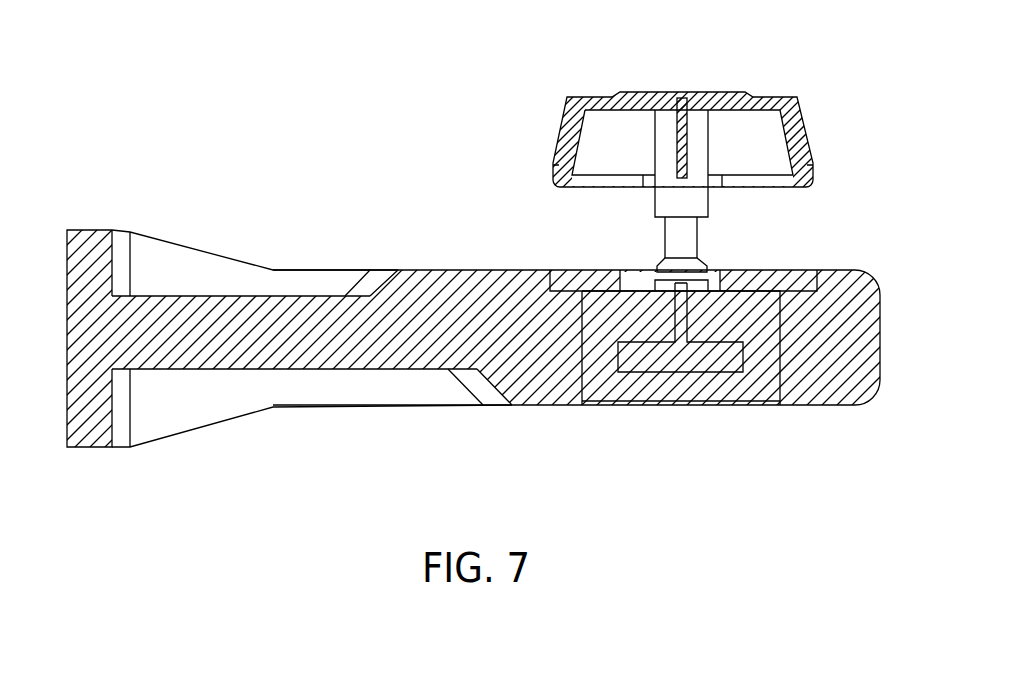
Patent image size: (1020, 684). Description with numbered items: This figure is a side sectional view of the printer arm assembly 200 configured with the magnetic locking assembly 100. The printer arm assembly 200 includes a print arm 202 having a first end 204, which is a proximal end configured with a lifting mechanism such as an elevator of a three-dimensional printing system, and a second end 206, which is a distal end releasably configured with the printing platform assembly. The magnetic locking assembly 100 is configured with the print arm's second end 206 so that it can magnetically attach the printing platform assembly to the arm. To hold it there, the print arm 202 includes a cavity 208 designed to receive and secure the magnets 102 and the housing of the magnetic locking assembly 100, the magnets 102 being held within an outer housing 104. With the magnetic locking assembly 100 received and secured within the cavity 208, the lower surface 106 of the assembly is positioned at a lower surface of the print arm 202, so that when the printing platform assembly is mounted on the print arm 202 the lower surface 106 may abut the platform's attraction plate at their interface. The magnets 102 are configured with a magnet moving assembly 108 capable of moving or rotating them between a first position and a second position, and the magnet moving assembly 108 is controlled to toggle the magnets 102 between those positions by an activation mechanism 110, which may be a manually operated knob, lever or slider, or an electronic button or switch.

The magnetic locking assembly 100 is at (665, 127).
The magnets 102 is at (688, 386).
The outer housing 104 is at (768, 352).
The lower surface 106 is at (715, 414).
The magnet moving assembly 108 is at (630, 284).
The activation mechanism 110 is at (640, 92).
The printer arm assembly 200 is at (267, 200).
The print arm 202 is at (422, 270).
The first end 204 is at (67, 252).
The second end 206 is at (882, 322).
The cavity 208 is at (570, 348).